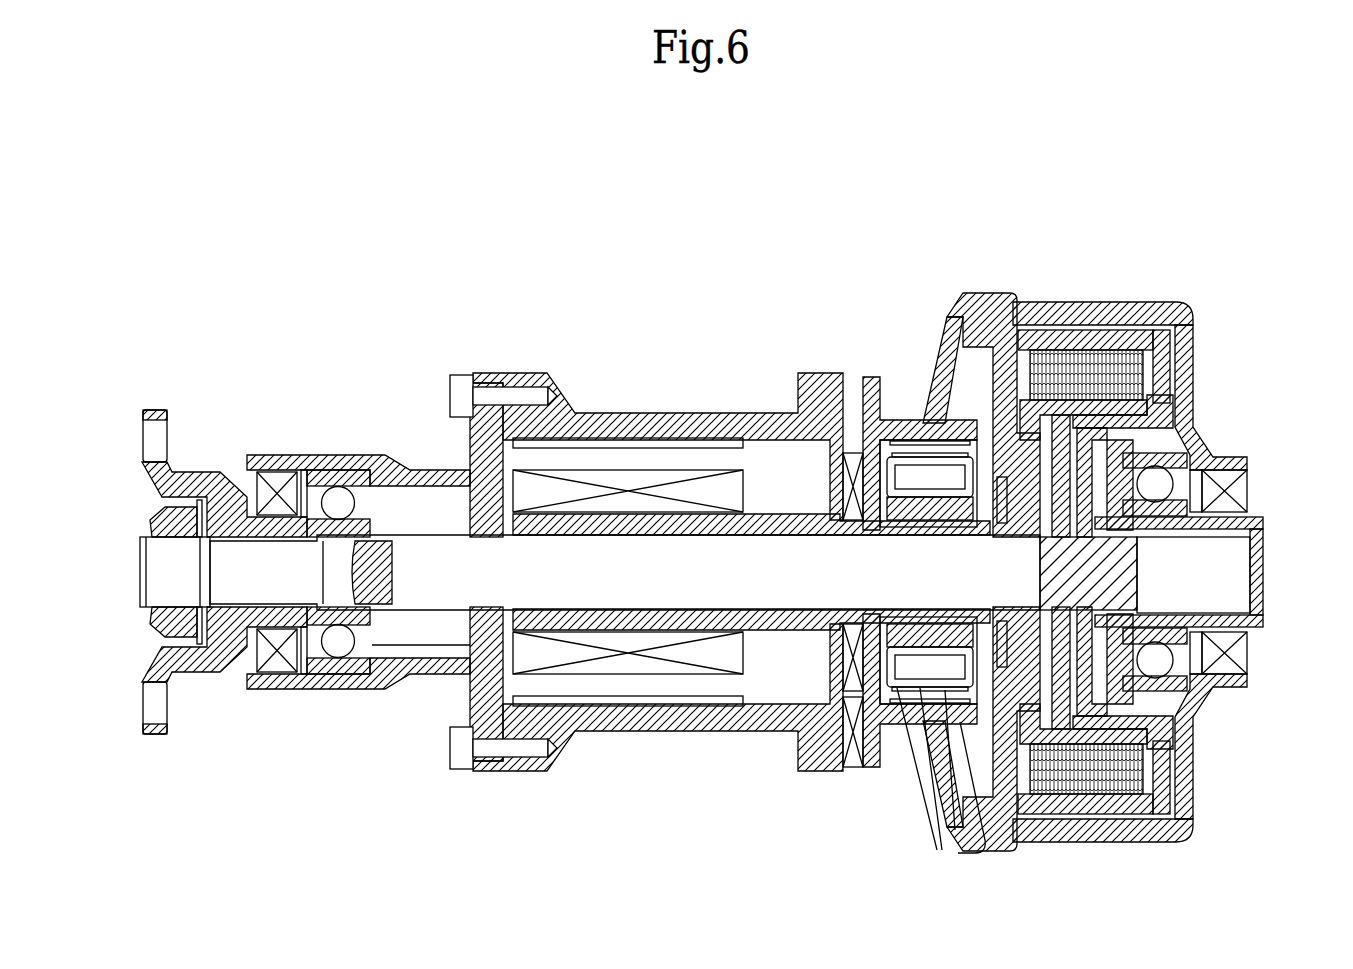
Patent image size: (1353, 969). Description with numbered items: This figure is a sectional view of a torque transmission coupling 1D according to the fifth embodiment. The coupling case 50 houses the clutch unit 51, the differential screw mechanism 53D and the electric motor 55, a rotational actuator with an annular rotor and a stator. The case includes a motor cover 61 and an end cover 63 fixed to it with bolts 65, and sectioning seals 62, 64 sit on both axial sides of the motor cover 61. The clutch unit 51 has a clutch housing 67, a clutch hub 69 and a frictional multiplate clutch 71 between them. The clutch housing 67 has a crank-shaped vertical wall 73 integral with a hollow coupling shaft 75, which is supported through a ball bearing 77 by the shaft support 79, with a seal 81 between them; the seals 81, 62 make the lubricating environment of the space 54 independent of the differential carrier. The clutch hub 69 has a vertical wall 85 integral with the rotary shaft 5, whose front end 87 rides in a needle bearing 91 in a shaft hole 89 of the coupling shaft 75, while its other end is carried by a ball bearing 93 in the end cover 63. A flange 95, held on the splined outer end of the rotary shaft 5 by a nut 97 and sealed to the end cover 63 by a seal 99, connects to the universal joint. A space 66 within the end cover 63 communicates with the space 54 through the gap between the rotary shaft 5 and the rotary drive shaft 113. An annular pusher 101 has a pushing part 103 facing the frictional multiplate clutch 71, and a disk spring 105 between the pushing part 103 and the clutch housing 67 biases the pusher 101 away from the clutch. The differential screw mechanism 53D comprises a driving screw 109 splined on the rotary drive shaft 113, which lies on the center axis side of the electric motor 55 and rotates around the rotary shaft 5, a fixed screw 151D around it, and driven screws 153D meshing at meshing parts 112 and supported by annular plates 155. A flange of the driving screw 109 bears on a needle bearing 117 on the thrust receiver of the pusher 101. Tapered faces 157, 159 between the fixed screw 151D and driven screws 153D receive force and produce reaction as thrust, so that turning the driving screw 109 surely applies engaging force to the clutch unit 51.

The torque transmission coupling 1D is at (1012, 245).
The rotary shaft 5 is at (600, 563).
The coupling case 50 is at (1160, 302).
The clutch unit 51 is at (1200, 330).
The differential screw mechanism 53D is at (945, 420).
The space 54 is at (1010, 843).
The electric motor 55 is at (640, 447).
The motor cover 61 is at (683, 414).
The sectioning seal 62 is at (730, 730).
The end cover 63 is at (375, 458).
The sectioning seal 64 is at (478, 640).
The bolts 65 is at (462, 378).
The space 66 is at (380, 652).
The clutch housing 67 is at (1090, 395).
The clutch hub 69 is at (1185, 410).
The frictional multiplate clutch 71 is at (1141, 303).
The vertical wall 73 is at (1168, 360).
The coupling shaft 75 is at (1258, 517).
The ball bearing 77 is at (1195, 455).
The shaft support 79 is at (1225, 470).
The seal 81 is at (1242, 505).
The vertical wall 85 is at (1047, 530).
The front end 87 is at (1142, 578).
The shaft hole 89 is at (1233, 647).
The needle bearing 91 is at (1142, 558).
The ball bearing 93 is at (337, 468).
The flange 95 is at (150, 410).
The nut 97 is at (182, 520).
The seal 99 is at (270, 470).
The pusher 101 is at (987, 375).
The pushing part 103 is at (1022, 343).
The disk spring 105 is at (1060, 345).
The driving screw 109 is at (895, 522).
The meshing part 112 is at (835, 713).
The rotary drive shaft 113 is at (742, 517).
The needle bearing 117 is at (1000, 523).
The fixed screw 151D is at (922, 435).
The driven screws 153D is at (908, 455).
The annular plates 155 is at (885, 455).
The tapered face 157 is at (827, 770).
The tapered face 159 is at (880, 740).